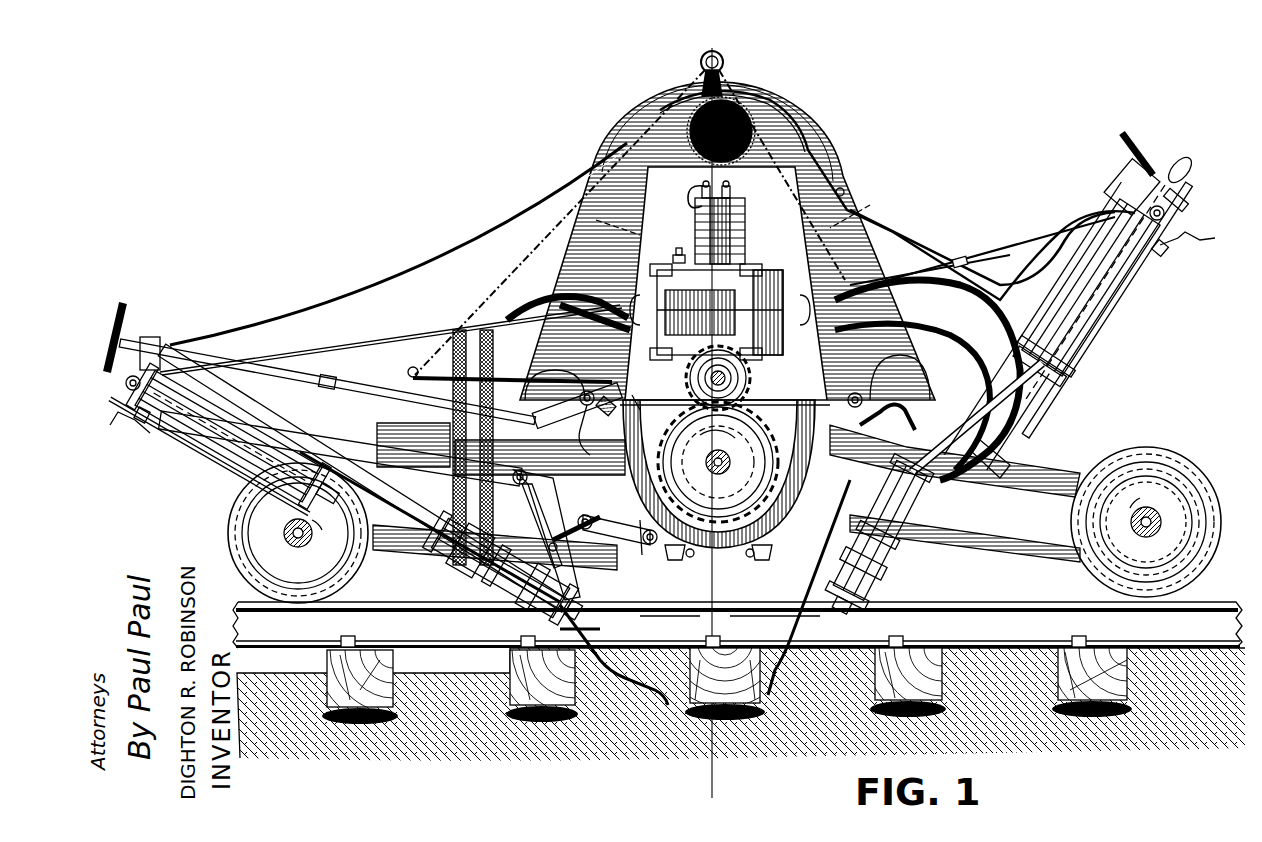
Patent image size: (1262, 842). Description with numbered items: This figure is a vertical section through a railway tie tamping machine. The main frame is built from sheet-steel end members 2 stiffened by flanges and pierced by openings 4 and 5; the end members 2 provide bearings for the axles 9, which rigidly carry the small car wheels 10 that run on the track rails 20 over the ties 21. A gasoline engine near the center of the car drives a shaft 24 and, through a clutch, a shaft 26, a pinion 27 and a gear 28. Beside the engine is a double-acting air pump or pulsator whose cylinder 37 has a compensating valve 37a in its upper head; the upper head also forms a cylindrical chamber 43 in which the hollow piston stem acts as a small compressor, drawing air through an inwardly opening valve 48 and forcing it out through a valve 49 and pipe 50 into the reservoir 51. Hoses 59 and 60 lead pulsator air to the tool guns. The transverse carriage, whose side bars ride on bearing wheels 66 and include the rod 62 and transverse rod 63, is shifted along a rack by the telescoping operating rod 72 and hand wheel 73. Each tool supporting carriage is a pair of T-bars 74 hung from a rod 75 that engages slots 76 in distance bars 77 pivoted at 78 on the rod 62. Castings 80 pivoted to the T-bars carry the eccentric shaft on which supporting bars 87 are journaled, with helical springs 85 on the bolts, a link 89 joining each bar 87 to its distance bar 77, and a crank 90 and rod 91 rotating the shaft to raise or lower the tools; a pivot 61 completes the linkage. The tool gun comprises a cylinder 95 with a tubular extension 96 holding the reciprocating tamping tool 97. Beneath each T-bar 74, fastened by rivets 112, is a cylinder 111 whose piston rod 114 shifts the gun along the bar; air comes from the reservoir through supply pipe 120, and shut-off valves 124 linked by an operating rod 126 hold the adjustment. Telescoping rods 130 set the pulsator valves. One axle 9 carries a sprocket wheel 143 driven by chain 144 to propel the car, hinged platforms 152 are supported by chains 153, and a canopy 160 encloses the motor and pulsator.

The end member 2 is at (665, 45).
The opening 4 is at (450, 418).
The opening 5 is at (765, 183).
The axle 9 is at (292, 530).
The car wheel 10 is at (232, 540).
The rail 20 is at (1220, 600).
The tie 21 is at (335, 658).
The shaft 24 is at (718, 462).
The shaft 26 is at (735, 370).
The pinion 27 is at (742, 380).
The gear 28 is at (725, 466).
The cylinder 37 is at (752, 270).
The compensating valve 37a is at (678, 256).
The cylindrical chamber 43 is at (740, 212).
The inwardly opening valve 48 is at (730, 192).
The valve 49 is at (707, 192).
The pipe 50 is at (688, 183).
The reservoir 51 is at (728, 98).
The hose 59 is at (548, 312).
The hose 60 is at (585, 340).
The link 61 is at (497, 448).
The rod 62 is at (642, 536).
The transverse rod 63 is at (578, 398).
The bearing wheel 66 is at (678, 558).
The telescoping operating rod 72 is at (225, 348).
The hand wheel 73 is at (126, 300).
The T-bar 74 is at (262, 432).
The rod 75 is at (128, 385).
The slot 76 is at (1188, 178).
The distance bar 77 is at (1185, 162).
The pivot 78 is at (653, 560).
The casting 80 is at (500, 590).
The helical spring 85 is at (598, 629).
The supporting bar 87 is at (545, 482).
The link 89 is at (640, 552).
The crank 90 is at (650, 616).
The rod 91 is at (500, 527).
The cylinder 95 is at (468, 590).
The tubular extension 96 is at (535, 605).
The tamping tool 97 is at (630, 674).
The cylinder 111 is at (230, 455).
The rivet 112 is at (175, 373).
The rod 114 is at (393, 533).
The supply pipe 120 is at (440, 257).
The shut-off valve 124 is at (140, 418).
The operating rod 126 is at (110, 425).
The telescoping operating rod 130 is at (385, 345).
The sprocket wheel 143 is at (1115, 455).
The chain 144 is at (1010, 470).
The platform 152 is at (410, 374).
The chain 153 is at (775, 118).
The canopy 160 is at (596, 220).